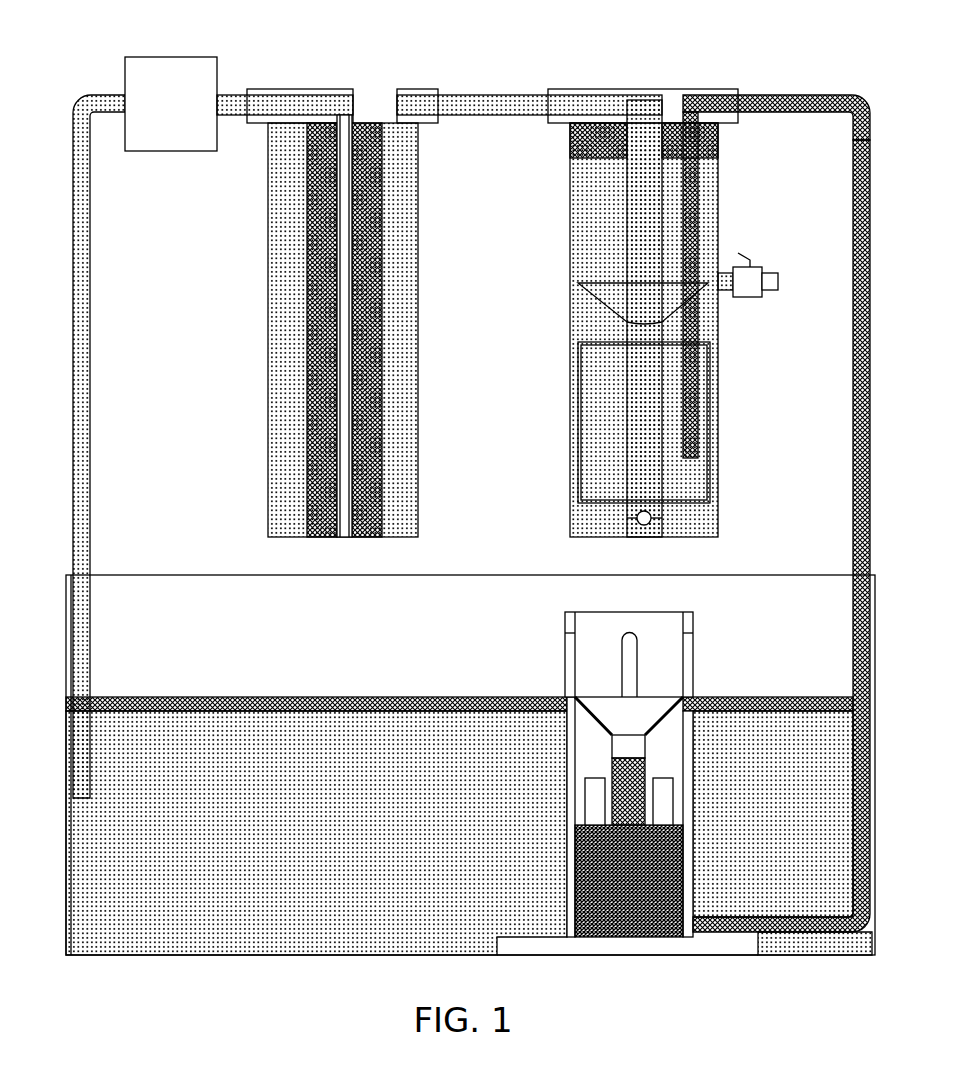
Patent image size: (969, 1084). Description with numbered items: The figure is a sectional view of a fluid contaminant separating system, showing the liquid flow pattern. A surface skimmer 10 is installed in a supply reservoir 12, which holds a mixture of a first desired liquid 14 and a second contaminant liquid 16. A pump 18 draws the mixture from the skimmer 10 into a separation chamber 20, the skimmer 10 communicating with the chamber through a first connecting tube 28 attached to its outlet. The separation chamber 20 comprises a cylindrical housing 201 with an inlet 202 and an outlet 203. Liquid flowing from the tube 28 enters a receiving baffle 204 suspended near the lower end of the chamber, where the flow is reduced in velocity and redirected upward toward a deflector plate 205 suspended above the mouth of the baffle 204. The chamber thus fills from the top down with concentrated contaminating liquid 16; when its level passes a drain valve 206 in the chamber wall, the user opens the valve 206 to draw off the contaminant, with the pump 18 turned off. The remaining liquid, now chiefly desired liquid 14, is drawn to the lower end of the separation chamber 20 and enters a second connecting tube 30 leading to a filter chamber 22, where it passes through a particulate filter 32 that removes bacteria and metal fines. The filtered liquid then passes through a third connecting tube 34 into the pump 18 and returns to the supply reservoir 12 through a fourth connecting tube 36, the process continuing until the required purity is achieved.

The surface skimmer 10 is at (693, 657).
The supply reservoir 12 is at (208, 637).
The first desired liquid 14 is at (287, 730).
The second contaminant liquid 16 is at (365, 697).
The pump 18 is at (175, 82).
The separation chamber 20 is at (738, 88).
The filter chamber 22 is at (309, 326).
The first connecting tube 28 is at (855, 407).
The second connecting tube 30 is at (480, 92).
The particulate filter 32 is at (313, 404).
The third connecting tube 34 is at (232, 93).
The fourth connecting tube 36 is at (90, 300).
The cylindrical housing 201 is at (570, 202).
The inlet 202 is at (702, 162).
The outlet 203 is at (662, 113).
The receiving baffle 204 is at (600, 442).
The deflector plate 205 is at (600, 293).
The drain valve 206 is at (760, 298).